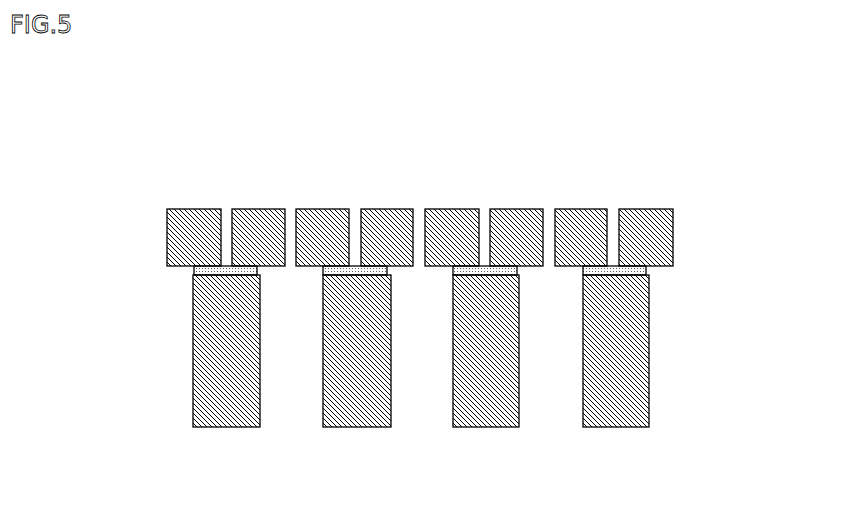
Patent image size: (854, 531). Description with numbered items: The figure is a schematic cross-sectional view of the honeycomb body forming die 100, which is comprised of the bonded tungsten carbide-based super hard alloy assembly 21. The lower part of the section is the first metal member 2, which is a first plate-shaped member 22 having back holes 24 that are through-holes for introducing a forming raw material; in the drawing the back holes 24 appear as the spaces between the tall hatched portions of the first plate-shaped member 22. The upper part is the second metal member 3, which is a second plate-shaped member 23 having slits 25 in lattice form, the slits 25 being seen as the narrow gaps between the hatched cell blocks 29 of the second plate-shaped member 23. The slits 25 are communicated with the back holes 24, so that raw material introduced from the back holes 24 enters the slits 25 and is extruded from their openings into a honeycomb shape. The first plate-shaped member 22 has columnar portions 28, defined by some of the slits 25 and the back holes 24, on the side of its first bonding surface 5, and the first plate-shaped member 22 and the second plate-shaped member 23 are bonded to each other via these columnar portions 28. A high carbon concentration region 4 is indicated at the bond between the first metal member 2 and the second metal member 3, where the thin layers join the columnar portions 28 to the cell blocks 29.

The honeycomb body forming die 100 is at (771, 61).
The bonded tungsten carbide-based super hard alloy assembly 21 is at (439, 281).
The second plate-shaped member 23 is at (167, 237).
The second metal member 3 is at (390, 192).
The cell block 29 is at (268, 209).
The slit 25 is at (357, 218).
The first bonding surface 5 is at (512, 209).
The columnar portion 28 is at (615, 270).
The high carbon concentration region 4 is at (193, 272).
The first plate-shaped member 22 is at (194, 354).
The first metal member 2 is at (378, 382).
The back hole 24 is at (292, 388).